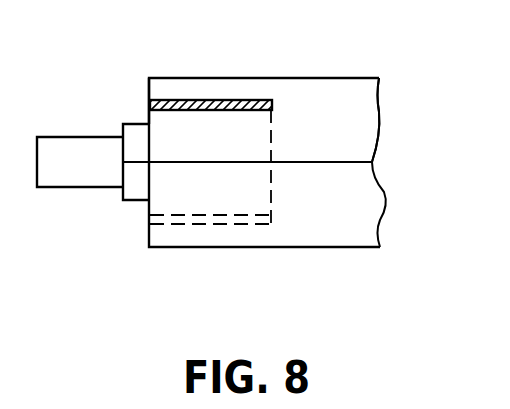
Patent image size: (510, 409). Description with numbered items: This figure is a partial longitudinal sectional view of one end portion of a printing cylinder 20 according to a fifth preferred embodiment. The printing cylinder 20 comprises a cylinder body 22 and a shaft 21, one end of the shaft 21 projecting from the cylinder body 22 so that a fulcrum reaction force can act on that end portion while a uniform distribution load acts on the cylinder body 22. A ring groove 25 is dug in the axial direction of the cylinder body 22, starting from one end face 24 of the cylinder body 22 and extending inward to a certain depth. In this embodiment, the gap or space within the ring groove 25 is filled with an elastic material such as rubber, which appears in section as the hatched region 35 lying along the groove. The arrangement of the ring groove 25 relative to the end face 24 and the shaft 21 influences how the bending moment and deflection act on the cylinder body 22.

The printing cylinder 20 is at (342, 254).
The shaft 21 is at (136, 123).
The cylinder body 22 is at (353, 85).
The end face 24 is at (148, 88).
The ring groove 25 is at (173, 99).
The hatched seal section 35 is at (208, 99).